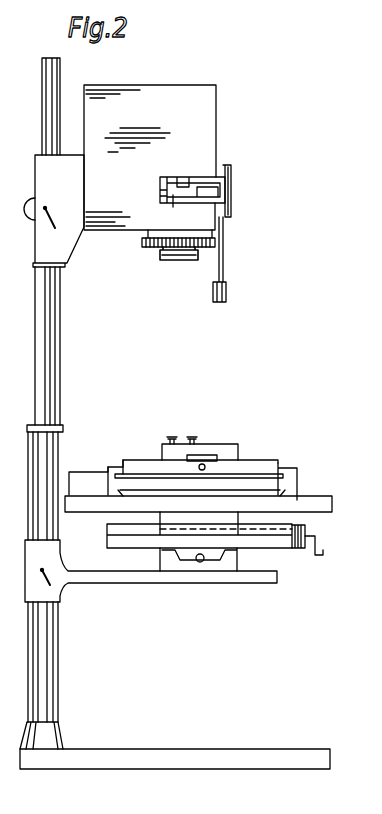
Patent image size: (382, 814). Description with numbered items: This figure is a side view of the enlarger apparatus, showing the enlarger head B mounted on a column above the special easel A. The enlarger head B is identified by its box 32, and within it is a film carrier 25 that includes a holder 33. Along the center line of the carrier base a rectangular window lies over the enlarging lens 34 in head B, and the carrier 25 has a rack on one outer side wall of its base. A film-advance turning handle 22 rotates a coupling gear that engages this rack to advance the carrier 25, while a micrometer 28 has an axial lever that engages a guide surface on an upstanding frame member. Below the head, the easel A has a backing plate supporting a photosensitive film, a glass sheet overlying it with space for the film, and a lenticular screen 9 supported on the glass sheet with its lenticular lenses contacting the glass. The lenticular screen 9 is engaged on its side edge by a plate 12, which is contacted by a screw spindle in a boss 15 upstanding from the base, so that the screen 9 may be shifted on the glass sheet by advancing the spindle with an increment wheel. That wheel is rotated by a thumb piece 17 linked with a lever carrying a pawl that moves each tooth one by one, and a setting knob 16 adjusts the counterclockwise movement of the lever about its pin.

The box 32 is at (218, 103).
The enlarger head B is at (200, 140).
The micrometer 28 is at (232, 168).
The film-advance turning handle 22 is at (227, 292).
The holder 33 is at (158, 185).
The film carrier 25 is at (174, 203).
The enlarging lens 34 is at (166, 261).
The thumb piece 17 is at (173, 436).
The setting knob 16 is at (193, 436).
The boss 15 is at (208, 458).
The lenticular screen 9 is at (247, 475).
The plate 12 is at (260, 465).
The easel A is at (216, 467).